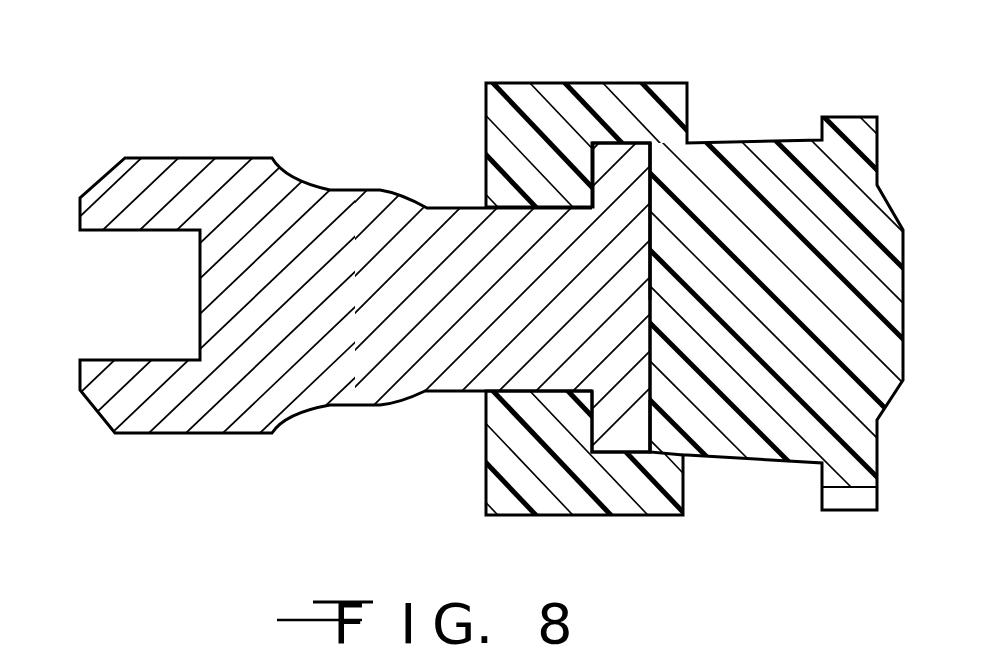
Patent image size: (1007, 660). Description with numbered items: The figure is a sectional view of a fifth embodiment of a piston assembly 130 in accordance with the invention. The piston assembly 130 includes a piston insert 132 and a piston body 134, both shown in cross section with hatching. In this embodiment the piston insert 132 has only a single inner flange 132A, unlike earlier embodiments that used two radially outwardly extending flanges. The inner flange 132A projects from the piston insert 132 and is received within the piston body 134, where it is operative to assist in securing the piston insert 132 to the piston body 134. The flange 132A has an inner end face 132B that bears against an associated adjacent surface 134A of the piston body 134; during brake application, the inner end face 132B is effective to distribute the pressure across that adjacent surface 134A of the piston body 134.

The piston assembly 130 is at (309, 112).
The piston insert 132 is at (221, 445).
The inner flange 132A is at (617, 158).
The inner end face 132B is at (653, 204).
The piston body 134 is at (562, 525).
The adjacent surface 134A is at (650, 413).